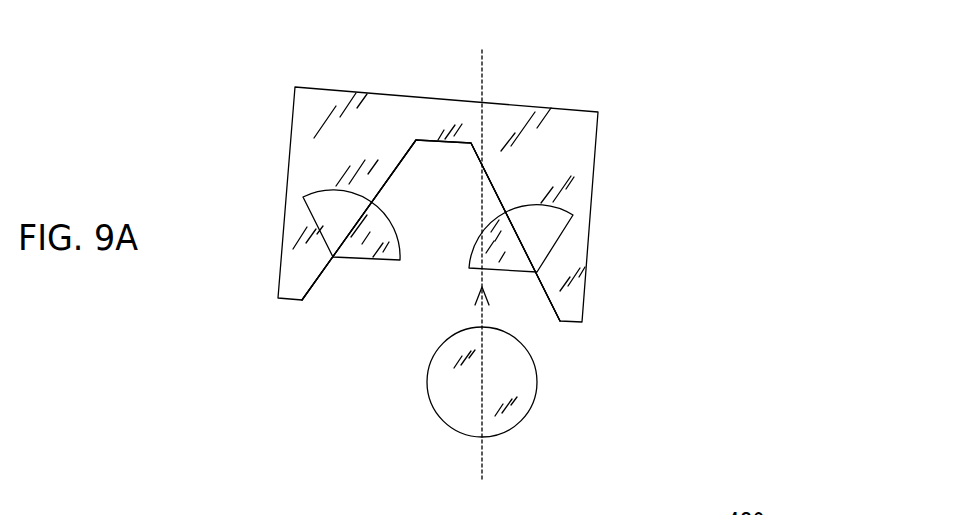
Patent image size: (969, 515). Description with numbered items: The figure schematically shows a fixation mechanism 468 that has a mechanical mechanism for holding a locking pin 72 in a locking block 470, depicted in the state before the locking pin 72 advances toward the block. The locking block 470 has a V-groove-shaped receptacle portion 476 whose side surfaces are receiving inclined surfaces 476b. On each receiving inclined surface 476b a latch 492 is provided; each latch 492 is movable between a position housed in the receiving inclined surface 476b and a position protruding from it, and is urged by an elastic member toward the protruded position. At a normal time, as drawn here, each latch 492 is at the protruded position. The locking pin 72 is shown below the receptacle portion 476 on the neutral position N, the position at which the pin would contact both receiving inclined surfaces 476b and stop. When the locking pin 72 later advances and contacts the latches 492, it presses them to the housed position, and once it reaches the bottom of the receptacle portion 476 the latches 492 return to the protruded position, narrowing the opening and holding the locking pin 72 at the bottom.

The fixation mechanism 468 is at (511, 202).
The locking block 470 is at (392, 110).
The receptacle portion 476 is at (461, 214).
The receiving inclined surface 476b is at (318, 282).
The latch 492 is at (364, 259).
The locking pin 72 is at (453, 413).
The neutral position N is at (483, 463).